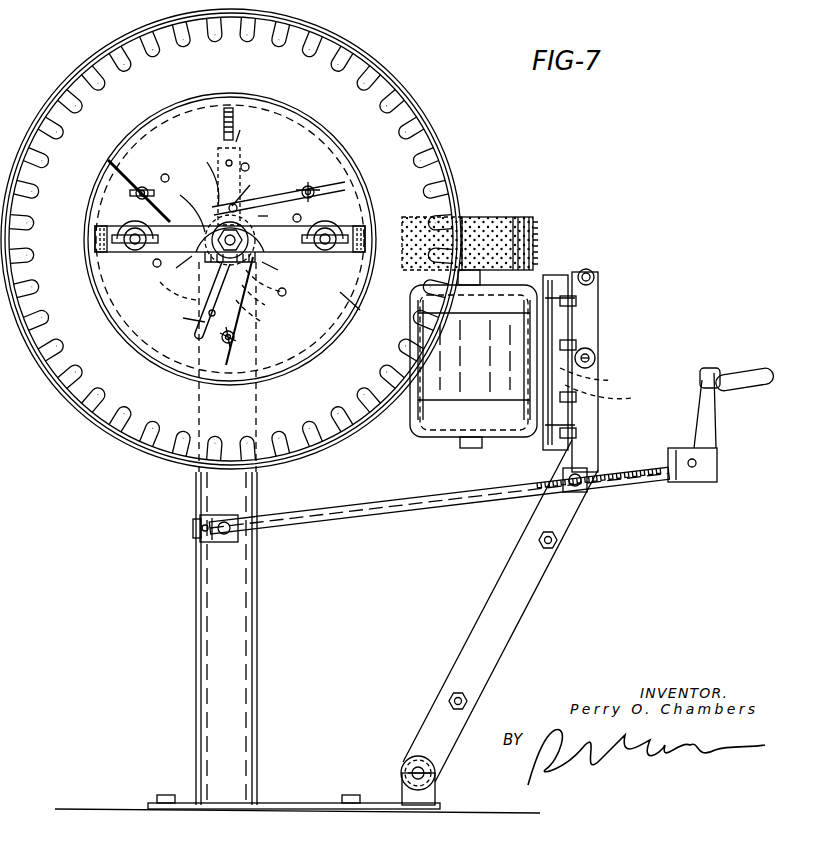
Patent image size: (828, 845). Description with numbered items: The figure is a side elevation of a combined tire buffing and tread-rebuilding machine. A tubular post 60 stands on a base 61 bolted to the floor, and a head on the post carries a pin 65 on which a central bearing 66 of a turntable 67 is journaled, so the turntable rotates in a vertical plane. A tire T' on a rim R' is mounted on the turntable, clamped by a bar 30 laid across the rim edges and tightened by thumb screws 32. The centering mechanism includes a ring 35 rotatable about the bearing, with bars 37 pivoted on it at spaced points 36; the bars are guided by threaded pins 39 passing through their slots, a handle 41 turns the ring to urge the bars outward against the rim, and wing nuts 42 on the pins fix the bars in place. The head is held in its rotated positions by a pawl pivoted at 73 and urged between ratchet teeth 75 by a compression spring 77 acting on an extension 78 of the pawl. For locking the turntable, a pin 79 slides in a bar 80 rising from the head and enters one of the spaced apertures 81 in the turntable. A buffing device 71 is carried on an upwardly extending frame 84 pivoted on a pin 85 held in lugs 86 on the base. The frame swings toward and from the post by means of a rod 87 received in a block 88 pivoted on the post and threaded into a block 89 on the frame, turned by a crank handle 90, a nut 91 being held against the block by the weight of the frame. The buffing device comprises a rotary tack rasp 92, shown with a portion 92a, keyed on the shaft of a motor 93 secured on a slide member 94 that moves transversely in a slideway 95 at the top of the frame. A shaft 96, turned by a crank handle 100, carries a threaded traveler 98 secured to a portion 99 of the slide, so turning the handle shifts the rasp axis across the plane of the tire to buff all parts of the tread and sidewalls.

The tire T' is at (231, 239).
The rim R' is at (230, 239).
The bar 30 is at (300, 262).
The thumb screws 32 is at (150, 254).
The ring 35 is at (274, 216).
The pivot points 36 is at (235, 225).
The bars 37 is at (250, 330).
The threaded pins 39 is at (212, 338).
The handle 41 is at (181, 316).
The wing nuts 42 is at (230, 342).
The pin 65 is at (191, 213).
The central bearing 66 is at (215, 178).
The turntable 67 is at (361, 307).
The pivot 73 is at (262, 300).
The teeth 75 is at (280, 284).
The compression spring 77 is at (175, 291).
The extension 78 is at (264, 320).
The pin 79 is at (251, 130).
The bar 80 is at (221, 166).
The apertures 81 is at (286, 292).
The frame 84 is at (528, 624).
The pin 85 is at (432, 775).
The lugs 86 is at (435, 790).
The rod 87 is at (440, 497).
The block 88 is at (237, 537).
The nut or block 89 is at (585, 470).
The crank handle 90 is at (702, 438).
The nut 91 is at (198, 520).
The rotary tack rasp 92 is at (512, 230).
The brush 92a is at (465, 232).
The motor 93 is at (456, 405).
The slide member 94 is at (553, 334).
The slideway 95 is at (560, 425).
The shaft 96 is at (594, 358).
The traveler 98 is at (598, 379).
The portion of slide 99 is at (610, 396).
The crank handle 100 is at (594, 274).
The tubular post 60 is at (258, 672).
The base 61 is at (300, 805).
The buffing device 71 is at (550, 224).